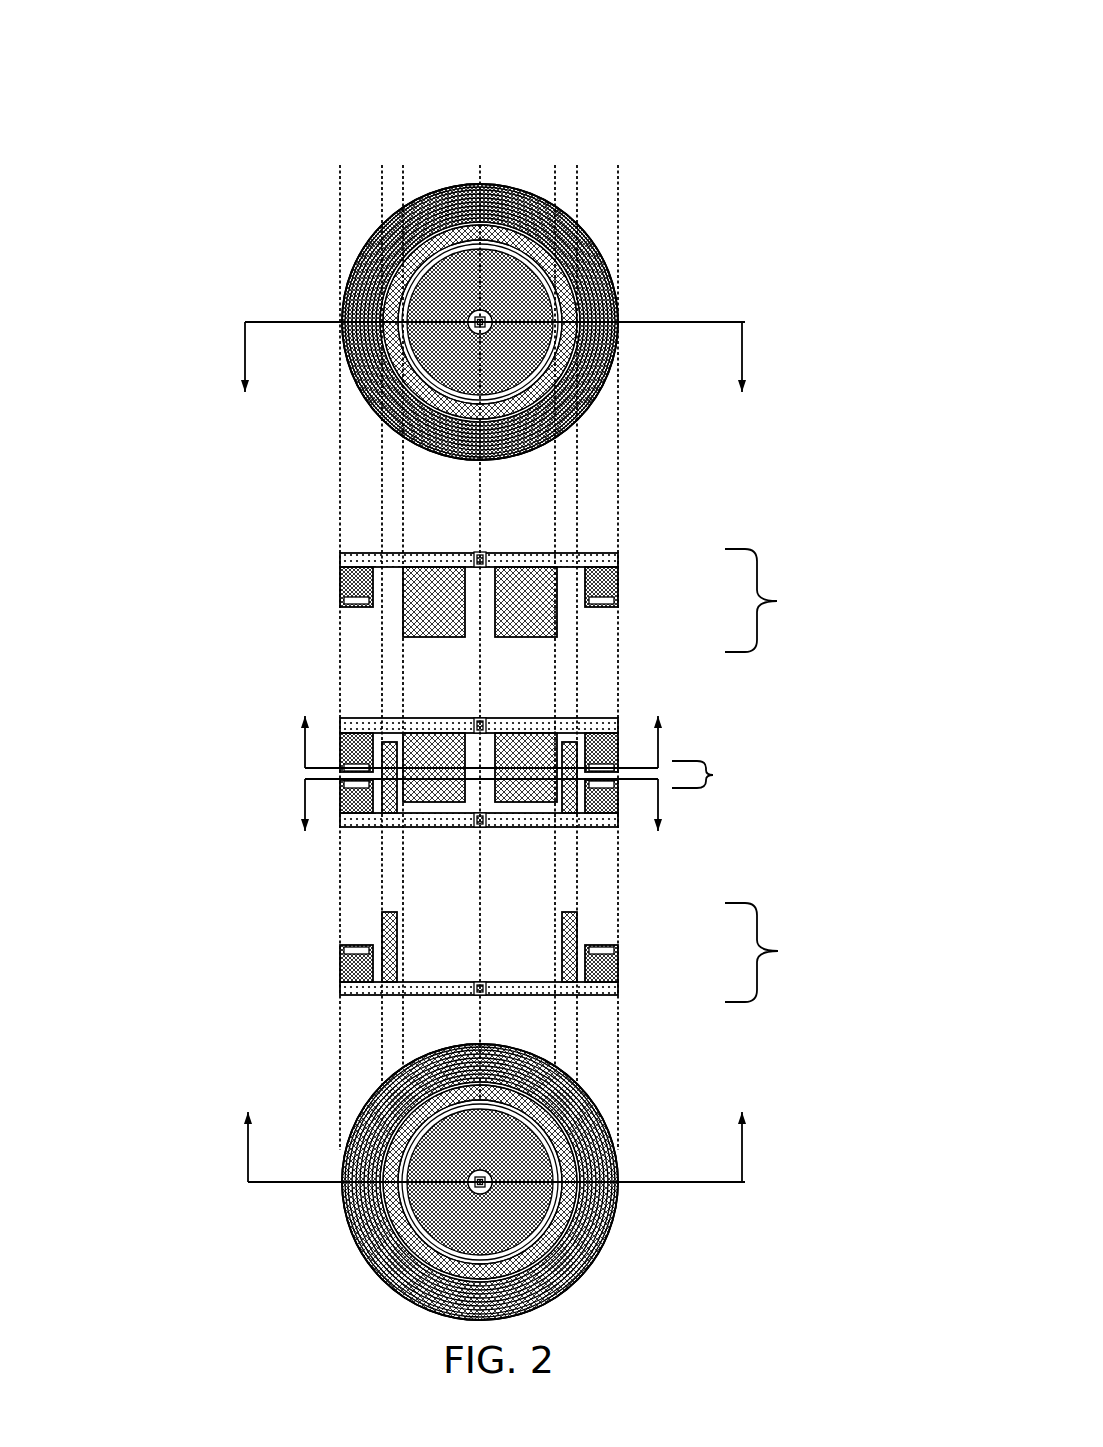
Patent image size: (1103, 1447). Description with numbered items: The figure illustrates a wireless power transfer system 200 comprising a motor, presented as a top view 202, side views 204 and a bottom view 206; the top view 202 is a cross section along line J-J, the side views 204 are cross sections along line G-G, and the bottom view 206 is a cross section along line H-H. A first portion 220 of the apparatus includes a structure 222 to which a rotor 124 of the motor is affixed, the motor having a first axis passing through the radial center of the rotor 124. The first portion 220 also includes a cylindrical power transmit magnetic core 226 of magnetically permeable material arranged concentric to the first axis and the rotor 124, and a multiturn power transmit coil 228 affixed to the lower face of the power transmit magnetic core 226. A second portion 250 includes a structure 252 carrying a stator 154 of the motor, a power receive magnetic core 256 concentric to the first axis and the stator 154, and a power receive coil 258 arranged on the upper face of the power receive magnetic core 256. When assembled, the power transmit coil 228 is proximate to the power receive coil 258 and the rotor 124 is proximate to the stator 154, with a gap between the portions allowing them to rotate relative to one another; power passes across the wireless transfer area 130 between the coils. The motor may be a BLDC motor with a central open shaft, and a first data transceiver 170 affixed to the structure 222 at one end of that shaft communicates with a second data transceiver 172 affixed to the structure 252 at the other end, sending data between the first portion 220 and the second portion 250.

The wireless power transfer system 200 is at (835, 30).
The top view 202 is at (200, 88).
The side views 204 is at (203, 487).
The bottom view 206 is at (205, 1120).
The rotor 124 is at (533, 280).
The stator 154 is at (578, 288).
The first data transceiver 170 is at (480, 322).
The second data transceiver 172 is at (478, 990).
The first portion 220 is at (812, 600).
The structure 222 is at (535, 553).
The power transmit magnetic core 226 is at (355, 583).
The power transmit coil 228 is at (278, 666).
The wireless transfer area 130 is at (614, 773).
The second portion 250 is at (823, 952).
The structure 252 is at (540, 992).
The power receive magnetic core 256 is at (343, 1200).
The power receive coil 258 is at (357, 947).